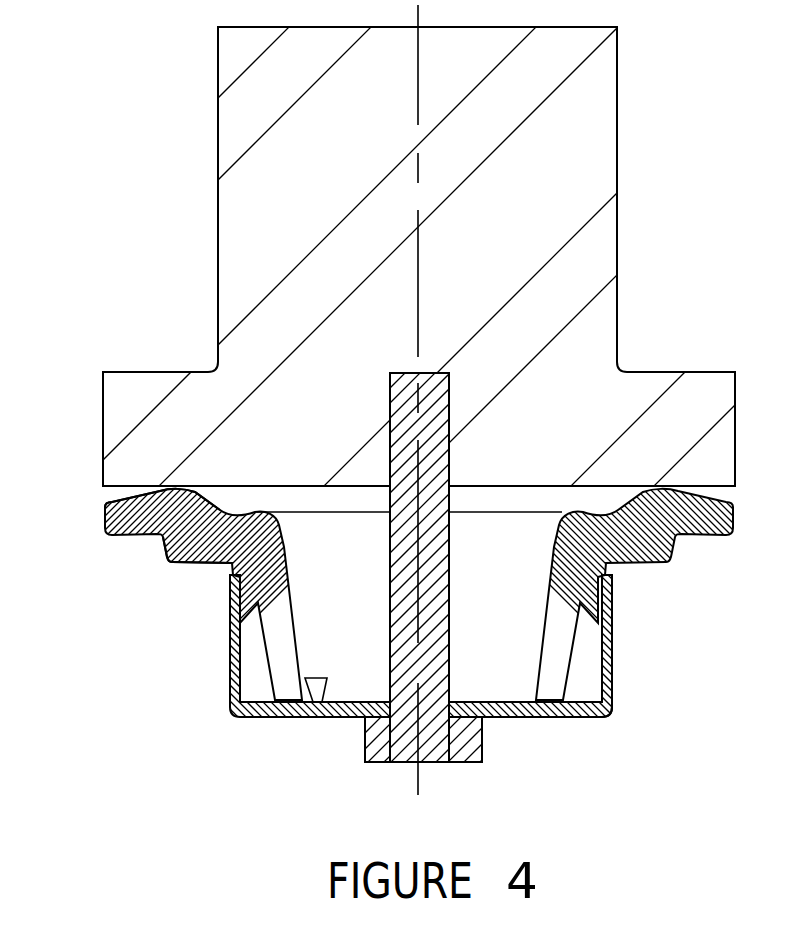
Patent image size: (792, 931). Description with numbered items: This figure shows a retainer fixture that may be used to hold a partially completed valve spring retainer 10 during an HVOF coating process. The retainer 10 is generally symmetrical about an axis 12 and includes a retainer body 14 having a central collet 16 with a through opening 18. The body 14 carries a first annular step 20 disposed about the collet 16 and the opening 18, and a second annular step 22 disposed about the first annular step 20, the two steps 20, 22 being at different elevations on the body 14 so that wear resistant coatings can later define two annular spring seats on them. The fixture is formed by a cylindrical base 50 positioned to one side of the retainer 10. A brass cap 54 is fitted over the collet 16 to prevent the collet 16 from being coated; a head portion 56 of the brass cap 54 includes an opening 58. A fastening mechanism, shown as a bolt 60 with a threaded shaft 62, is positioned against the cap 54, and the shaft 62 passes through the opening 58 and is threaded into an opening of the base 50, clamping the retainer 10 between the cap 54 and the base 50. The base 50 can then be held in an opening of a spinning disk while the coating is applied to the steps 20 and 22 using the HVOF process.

The valve spring retainer 10 is at (673, 551).
The axis 12 is at (420, 783).
The retainer body 14 is at (240, 632).
The central collet 16 is at (282, 670).
The through opening 18 is at (320, 680).
The first annular step 20 is at (167, 550).
The second annular step 22 is at (105, 522).
The cylindrical base 50 is at (598, 146).
The brass cap 54 is at (613, 705).
The head portion 56 is at (537, 717).
The opening 58 is at (453, 700).
The bolt 60 is at (470, 763).
The threaded shaft 62 is at (452, 557).